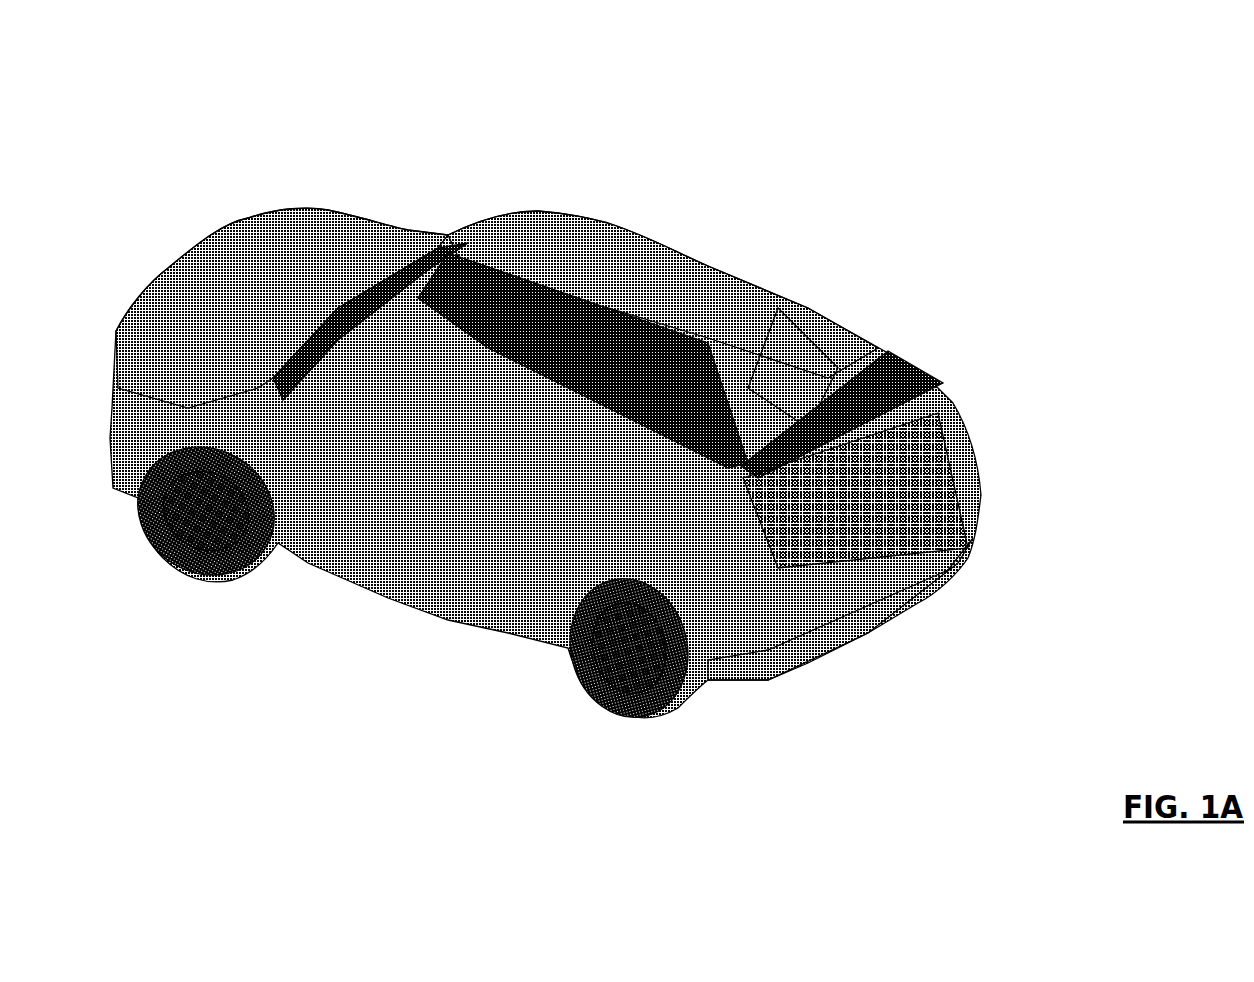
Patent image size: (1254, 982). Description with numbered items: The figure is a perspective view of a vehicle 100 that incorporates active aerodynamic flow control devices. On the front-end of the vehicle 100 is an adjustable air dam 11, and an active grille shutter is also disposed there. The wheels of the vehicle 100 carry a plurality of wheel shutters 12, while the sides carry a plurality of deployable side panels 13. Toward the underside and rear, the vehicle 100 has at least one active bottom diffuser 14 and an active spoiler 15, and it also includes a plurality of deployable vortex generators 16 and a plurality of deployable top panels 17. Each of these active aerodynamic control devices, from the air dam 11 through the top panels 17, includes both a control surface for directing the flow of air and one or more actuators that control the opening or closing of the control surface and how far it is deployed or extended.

The vehicle 100 is at (997, 145).
The adjustable air dam 11 is at (148, 272).
The wheel shutters 12 is at (213, 572).
The deployable side panels 13 is at (750, 565).
The active bottom diffuser 14 is at (905, 613).
The active spoiler 15 is at (890, 335).
The deployable vortex generators 16 is at (802, 345).
The deployable top panels 17 is at (660, 272).